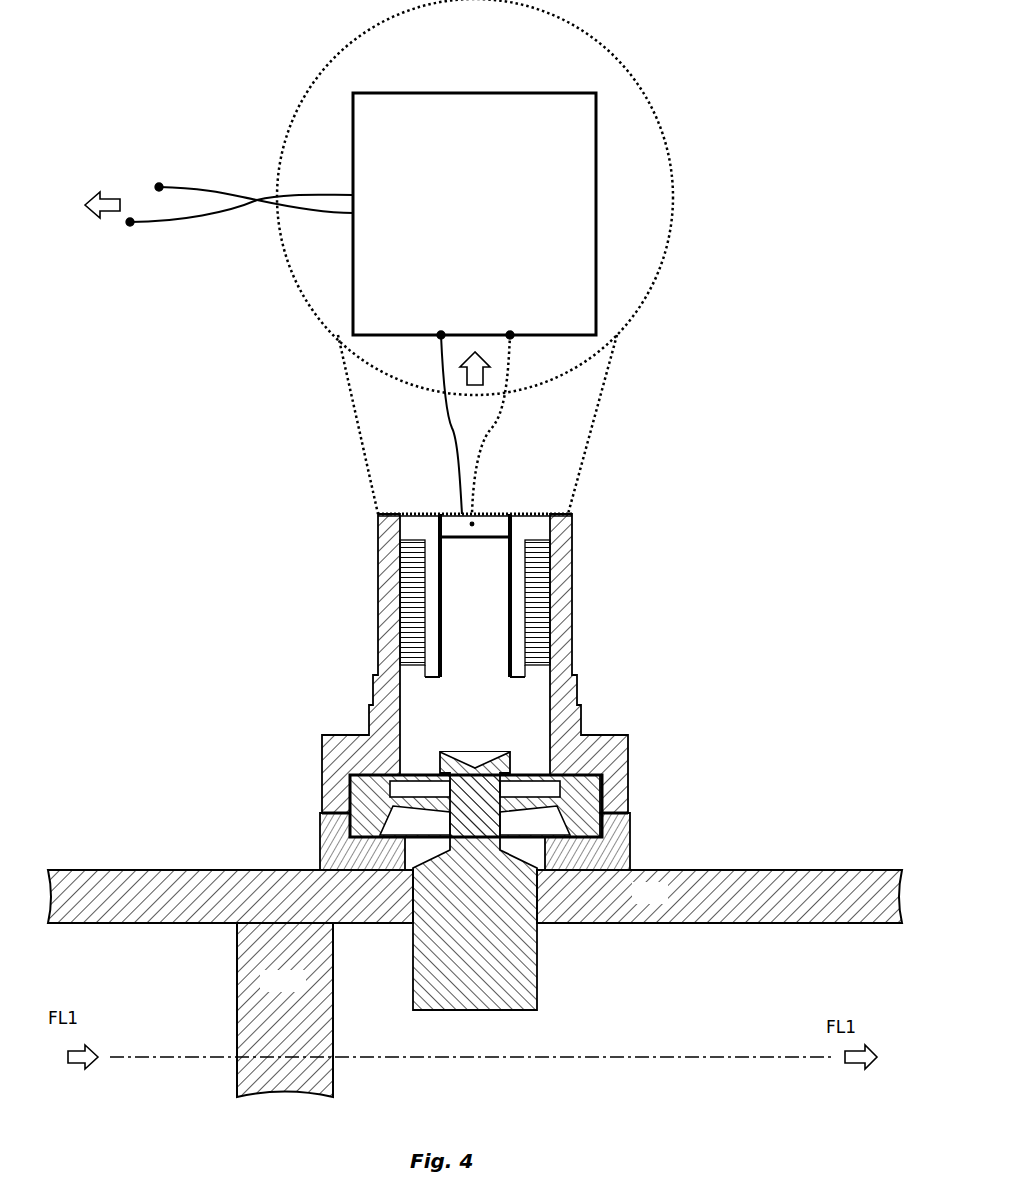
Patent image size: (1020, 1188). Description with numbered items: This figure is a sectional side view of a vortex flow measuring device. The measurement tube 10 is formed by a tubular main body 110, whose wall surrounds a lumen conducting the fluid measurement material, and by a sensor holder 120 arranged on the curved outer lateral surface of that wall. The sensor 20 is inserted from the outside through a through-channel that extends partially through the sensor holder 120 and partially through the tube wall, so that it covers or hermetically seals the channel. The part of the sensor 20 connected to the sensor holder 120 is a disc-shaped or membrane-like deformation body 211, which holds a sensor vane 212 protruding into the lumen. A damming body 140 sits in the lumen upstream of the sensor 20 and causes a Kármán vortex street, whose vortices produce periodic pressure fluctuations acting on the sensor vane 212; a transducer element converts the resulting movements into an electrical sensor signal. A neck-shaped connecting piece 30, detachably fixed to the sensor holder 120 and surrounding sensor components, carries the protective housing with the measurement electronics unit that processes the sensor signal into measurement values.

The measurement tube 10 is at (650, 893).
The sensor 20 is at (655, 252).
The neck-shaped connecting piece 30 is at (595, 511).
The main body 110 is at (205, 880).
The sensor holder 120 is at (620, 843).
The damming body 140 is at (285, 1010).
The deformation body 211 is at (425, 808).
The sensor vane 212 is at (522, 980).